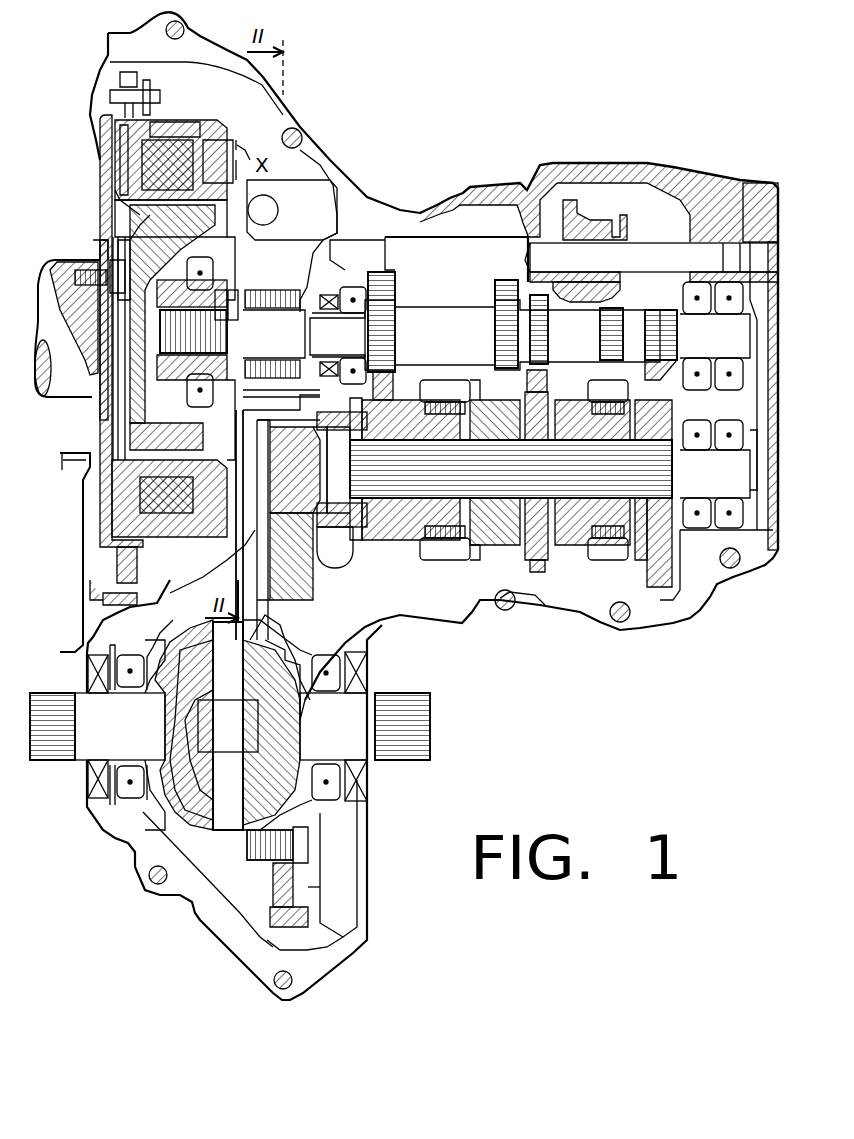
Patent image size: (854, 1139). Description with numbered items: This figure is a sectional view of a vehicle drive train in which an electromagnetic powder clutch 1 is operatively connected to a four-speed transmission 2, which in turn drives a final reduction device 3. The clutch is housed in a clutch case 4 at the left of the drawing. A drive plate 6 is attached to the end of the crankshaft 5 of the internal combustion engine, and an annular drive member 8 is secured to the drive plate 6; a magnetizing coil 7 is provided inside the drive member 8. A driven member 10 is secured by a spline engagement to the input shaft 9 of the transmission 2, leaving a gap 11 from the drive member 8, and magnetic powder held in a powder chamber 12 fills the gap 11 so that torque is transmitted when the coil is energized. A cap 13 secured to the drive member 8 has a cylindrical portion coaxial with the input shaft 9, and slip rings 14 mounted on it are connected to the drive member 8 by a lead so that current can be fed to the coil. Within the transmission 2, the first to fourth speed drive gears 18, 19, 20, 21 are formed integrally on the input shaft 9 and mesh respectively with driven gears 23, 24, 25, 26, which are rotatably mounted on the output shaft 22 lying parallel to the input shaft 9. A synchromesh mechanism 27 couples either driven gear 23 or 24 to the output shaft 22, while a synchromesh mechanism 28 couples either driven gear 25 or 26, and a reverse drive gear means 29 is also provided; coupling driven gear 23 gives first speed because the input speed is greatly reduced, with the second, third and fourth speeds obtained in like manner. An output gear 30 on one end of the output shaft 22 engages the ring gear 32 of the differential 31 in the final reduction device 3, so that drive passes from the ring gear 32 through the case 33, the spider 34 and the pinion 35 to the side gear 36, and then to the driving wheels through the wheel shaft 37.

The electromagnetic powder clutch 1 is at (200, 543).
The four-speed transmission 2 is at (673, 157).
The final reduction device 3 is at (114, 917).
The clutch housing 4 is at (305, 145).
The crankshaft 5 is at (62, 392).
The drive plate 6 is at (118, 145).
The magnetizing coil 7 is at (210, 160).
The drive member 8 is at (185, 118).
The input shaft 9 is at (448, 352).
The driven member 10 is at (118, 248).
The gap 11 is at (118, 200).
The powder chamber 12 is at (128, 218).
The cap 13 is at (230, 290).
The slip rings 14 is at (275, 290).
The 1st speed drive gear 18 is at (660, 295).
The 2nd speed drive gear 19 is at (548, 330).
The 3rd speed drive gear 20 is at (495, 290).
The 4th speed drive gear 21 is at (395, 290).
The output shaft 22 is at (710, 488).
The driven gear 23 is at (660, 587).
The driven gear 24 is at (538, 580).
The driven gear 25 is at (500, 560).
The driven gear 26 is at (372, 540).
The synchromesh mechanism 27 is at (600, 560).
The synchromesh mechanism 28 is at (445, 560).
The reverse drive gear means 29 is at (612, 308).
The output gear 30 is at (332, 548).
The differential 31 is at (165, 820).
The ring gear 32 is at (273, 930).
The case 33 is at (203, 820).
The spider 34 is at (242, 857).
The pinion 35 is at (215, 560).
The side gear 36 is at (160, 745).
The wheel shaft 37 is at (60, 695).